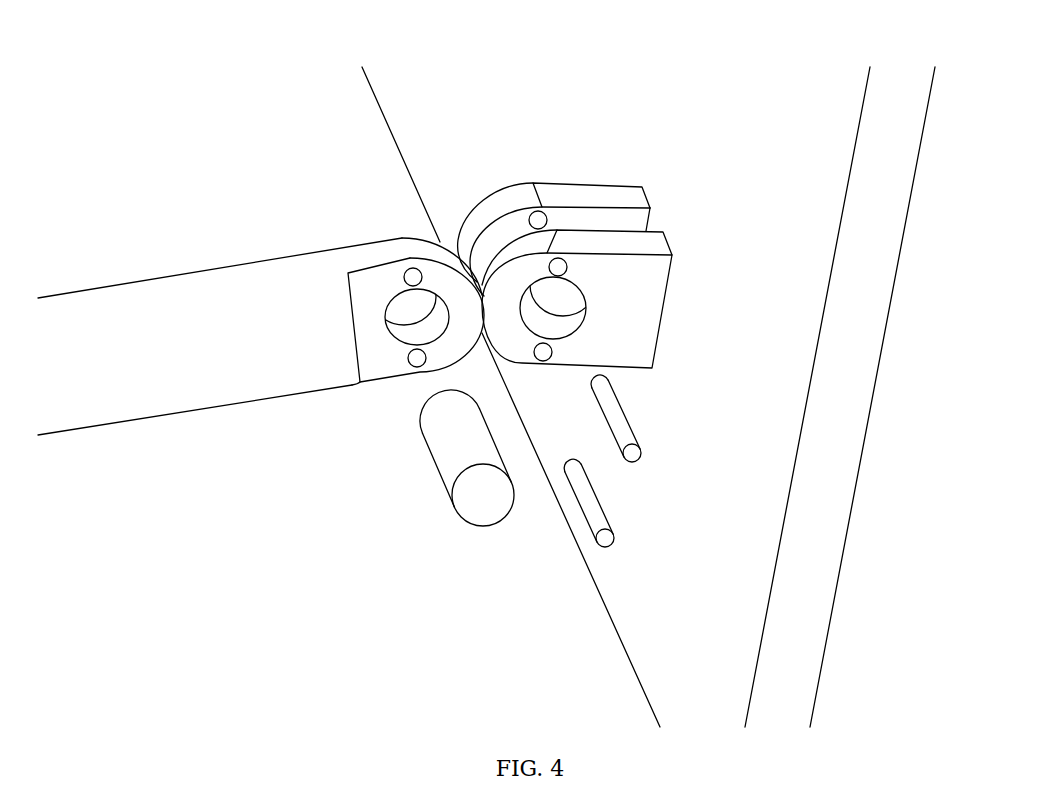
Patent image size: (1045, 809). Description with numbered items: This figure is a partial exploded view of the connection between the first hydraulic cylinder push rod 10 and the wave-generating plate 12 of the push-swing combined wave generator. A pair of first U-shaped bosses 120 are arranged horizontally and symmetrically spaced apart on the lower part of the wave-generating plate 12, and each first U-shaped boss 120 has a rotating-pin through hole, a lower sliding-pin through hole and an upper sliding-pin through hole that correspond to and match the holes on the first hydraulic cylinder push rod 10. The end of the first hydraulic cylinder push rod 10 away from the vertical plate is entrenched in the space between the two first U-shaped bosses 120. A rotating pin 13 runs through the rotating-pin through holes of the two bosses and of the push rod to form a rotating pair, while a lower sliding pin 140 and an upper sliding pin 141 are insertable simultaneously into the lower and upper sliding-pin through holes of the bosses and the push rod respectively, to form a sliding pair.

The first hydraulic cylinder push rod 10 is at (287, 280).
The wave-generating plate 12 is at (428, 118).
The first U-shaped boss 120 is at (636, 275).
The rotating pin 13 is at (440, 443).
The lower sliding pin 140 is at (588, 505).
The upper sliding pin 141 is at (640, 452).